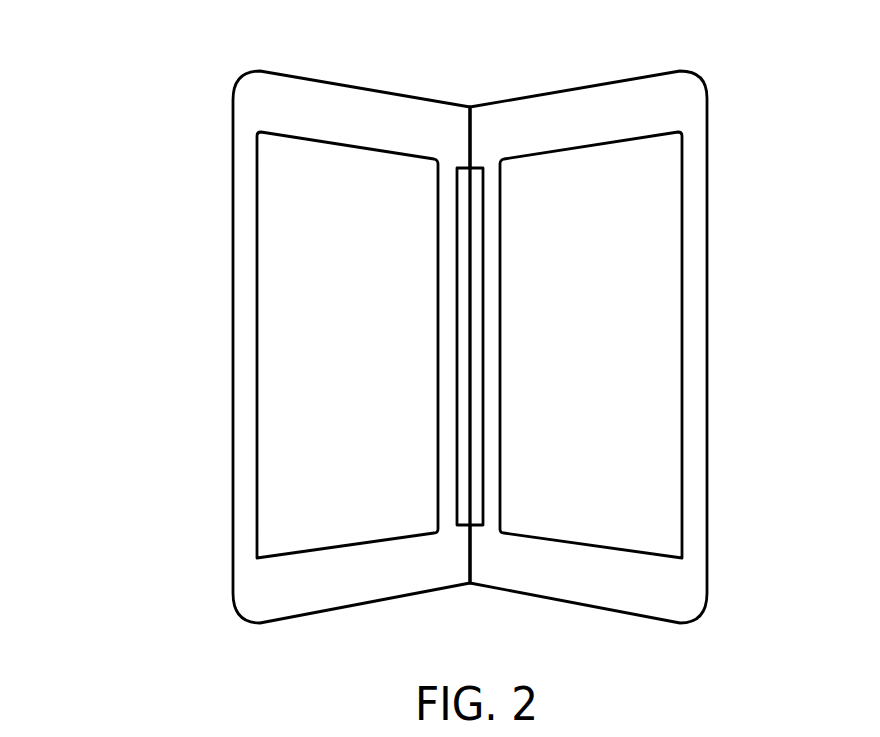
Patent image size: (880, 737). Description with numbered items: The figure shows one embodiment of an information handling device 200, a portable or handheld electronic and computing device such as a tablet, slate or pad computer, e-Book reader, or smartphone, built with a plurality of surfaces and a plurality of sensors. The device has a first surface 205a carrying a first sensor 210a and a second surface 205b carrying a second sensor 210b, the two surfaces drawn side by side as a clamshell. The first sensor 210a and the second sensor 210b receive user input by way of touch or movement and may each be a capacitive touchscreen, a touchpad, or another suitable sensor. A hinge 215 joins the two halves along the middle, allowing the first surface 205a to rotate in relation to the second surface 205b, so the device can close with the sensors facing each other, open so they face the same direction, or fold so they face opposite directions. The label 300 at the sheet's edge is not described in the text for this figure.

The information handling device 200 is at (103, 103).
The first surface 205a is at (233, 126).
The second surface 205b is at (708, 118).
The first sensor 210a is at (256, 246).
The second sensor 210b is at (683, 240).
The hinge 215 is at (470, 527).
The device of FIG. 3 (label only) 300 is at (70, 736).